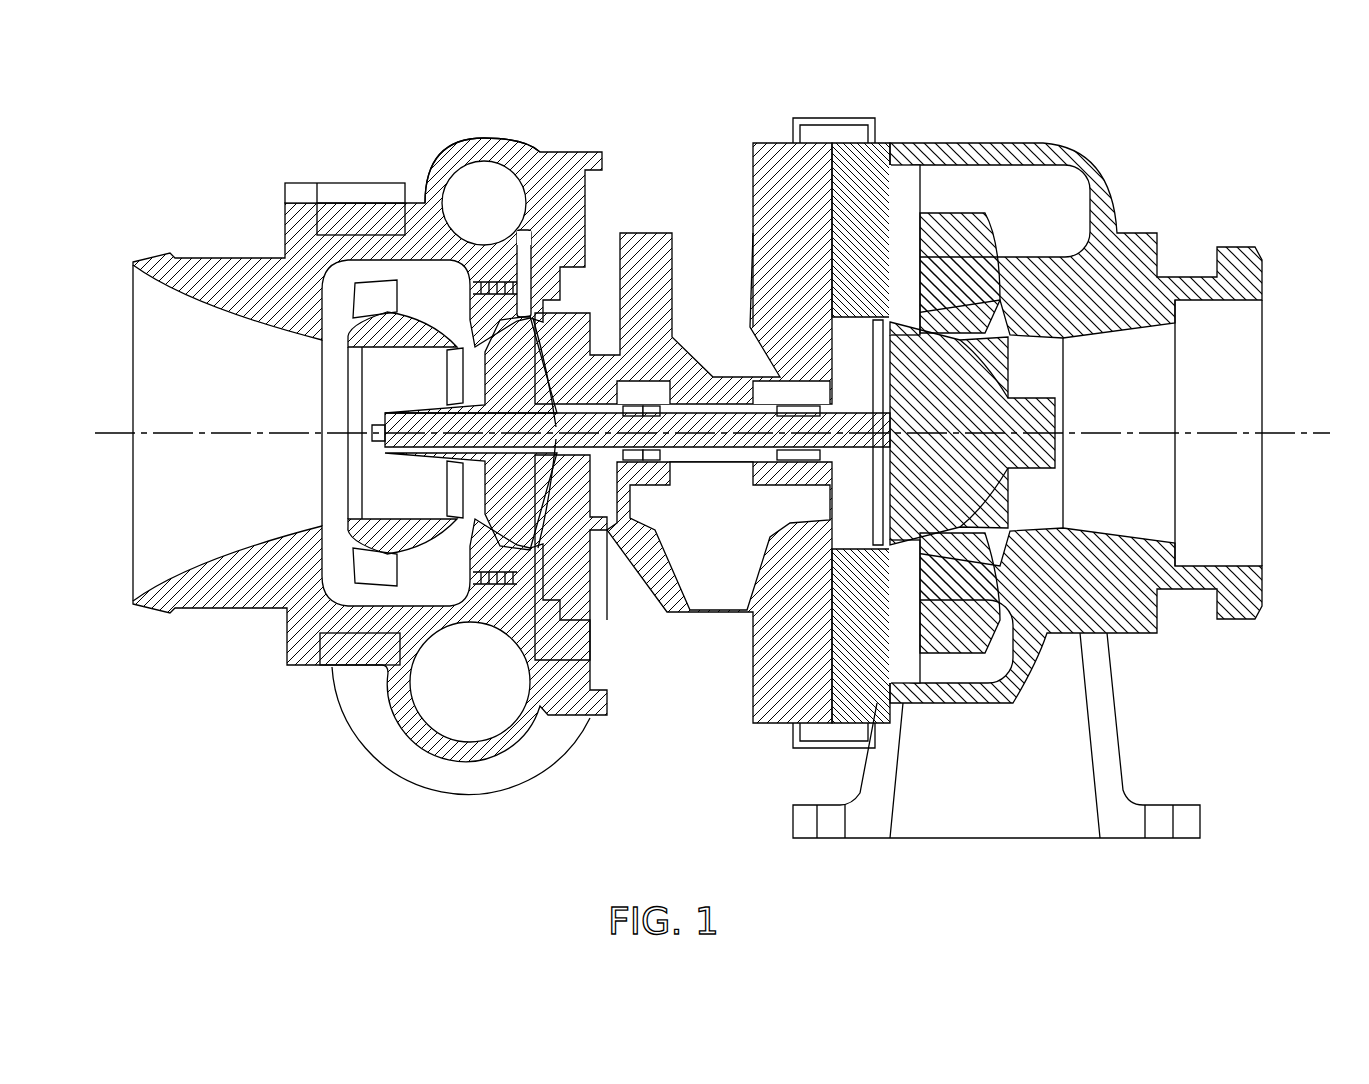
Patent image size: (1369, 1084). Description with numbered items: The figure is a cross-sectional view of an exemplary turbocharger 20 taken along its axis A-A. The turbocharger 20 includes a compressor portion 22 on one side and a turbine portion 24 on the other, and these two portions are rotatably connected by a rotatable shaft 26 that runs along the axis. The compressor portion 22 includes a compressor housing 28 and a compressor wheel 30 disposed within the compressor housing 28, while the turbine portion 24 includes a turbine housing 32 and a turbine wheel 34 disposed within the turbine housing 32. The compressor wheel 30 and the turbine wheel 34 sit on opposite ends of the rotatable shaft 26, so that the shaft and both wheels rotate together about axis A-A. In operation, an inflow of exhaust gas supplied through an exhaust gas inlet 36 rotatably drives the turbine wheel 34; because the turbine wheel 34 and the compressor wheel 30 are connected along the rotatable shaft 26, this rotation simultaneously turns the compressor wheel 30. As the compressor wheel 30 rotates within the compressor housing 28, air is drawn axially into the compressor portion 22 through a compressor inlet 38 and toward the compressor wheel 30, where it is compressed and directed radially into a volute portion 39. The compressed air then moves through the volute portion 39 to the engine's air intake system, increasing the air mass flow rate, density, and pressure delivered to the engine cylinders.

The turbocharger 20 is at (707, 452).
The compressor portion 22 is at (334, 440).
The turbine portion 24 is at (1029, 452).
The rotatable shaft 26 is at (702, 462).
The compressor housing 28 is at (447, 160).
The compressor wheel 30 is at (440, 460).
The turbine housing 32 is at (865, 165).
The turbine wheel 34 is at (1050, 395).
The exhaust gas inlet 36 is at (1110, 740).
The compressor inlet 38 is at (188, 348).
The volute portion 39 is at (511, 180).